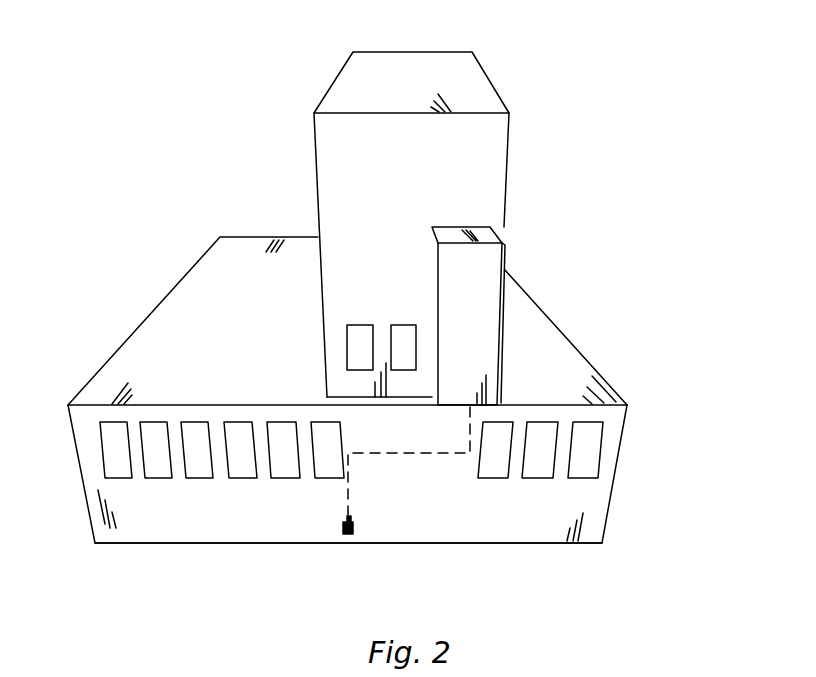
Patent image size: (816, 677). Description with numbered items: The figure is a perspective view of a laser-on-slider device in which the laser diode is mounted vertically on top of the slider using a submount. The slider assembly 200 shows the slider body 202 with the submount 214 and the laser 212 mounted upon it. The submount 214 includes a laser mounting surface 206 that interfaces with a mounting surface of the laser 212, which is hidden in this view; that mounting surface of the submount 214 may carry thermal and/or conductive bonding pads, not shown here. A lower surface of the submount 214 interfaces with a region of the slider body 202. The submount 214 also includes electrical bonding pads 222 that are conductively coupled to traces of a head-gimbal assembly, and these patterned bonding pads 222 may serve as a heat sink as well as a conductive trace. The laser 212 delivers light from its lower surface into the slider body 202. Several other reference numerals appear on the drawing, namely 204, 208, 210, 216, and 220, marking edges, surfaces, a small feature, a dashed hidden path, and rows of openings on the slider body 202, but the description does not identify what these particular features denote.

The slider assembly 200 is at (646, 131).
The slider body 202 is at (175, 285).
The bottom edge of base 204 is at (557, 545).
The laser mounting surface 206 is at (577, 373).
The switch 208 is at (347, 540).
The front surface of base 210 is at (185, 528).
The laser 212 is at (493, 238).
The submount 214 is at (486, 85).
The internal connection 216 is at (390, 455).
The vents 220 is at (158, 472).
The electrical bonding pads 222 is at (398, 325).